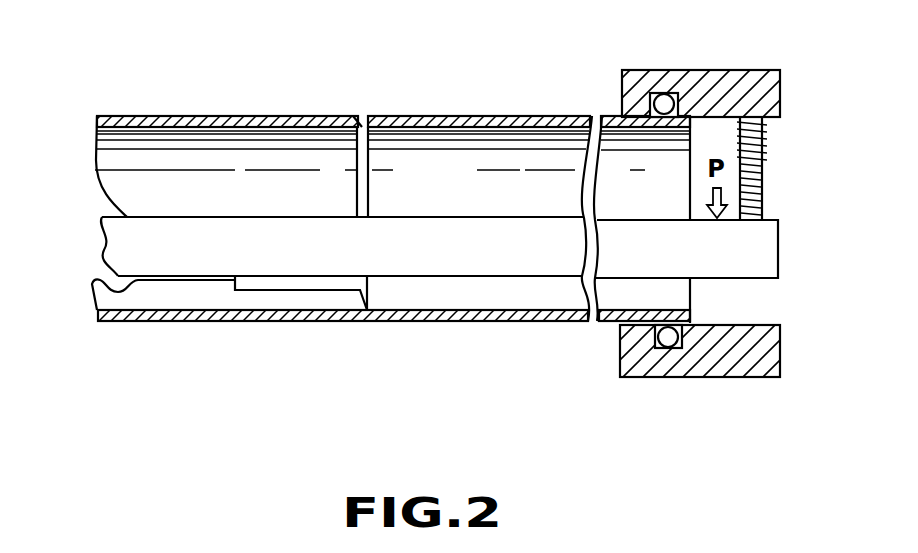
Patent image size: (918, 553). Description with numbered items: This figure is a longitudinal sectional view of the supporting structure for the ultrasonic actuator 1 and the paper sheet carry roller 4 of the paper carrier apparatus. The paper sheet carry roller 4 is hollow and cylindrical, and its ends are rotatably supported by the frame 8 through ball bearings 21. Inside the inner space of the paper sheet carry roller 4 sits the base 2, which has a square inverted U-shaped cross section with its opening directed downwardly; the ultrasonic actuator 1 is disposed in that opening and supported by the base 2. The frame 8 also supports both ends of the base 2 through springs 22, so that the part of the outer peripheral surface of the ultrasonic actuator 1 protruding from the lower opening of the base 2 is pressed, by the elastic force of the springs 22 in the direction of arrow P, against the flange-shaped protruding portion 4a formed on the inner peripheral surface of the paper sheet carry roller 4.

The ultrasonic actuator 1 is at (313, 284).
The base 2 is at (450, 263).
The paper sheet carry roller 4 is at (271, 116).
The protruding portion 4a is at (368, 177).
The frame 8 is at (765, 72).
The ball bearings 21 is at (663, 103).
The springs 22 is at (763, 170).